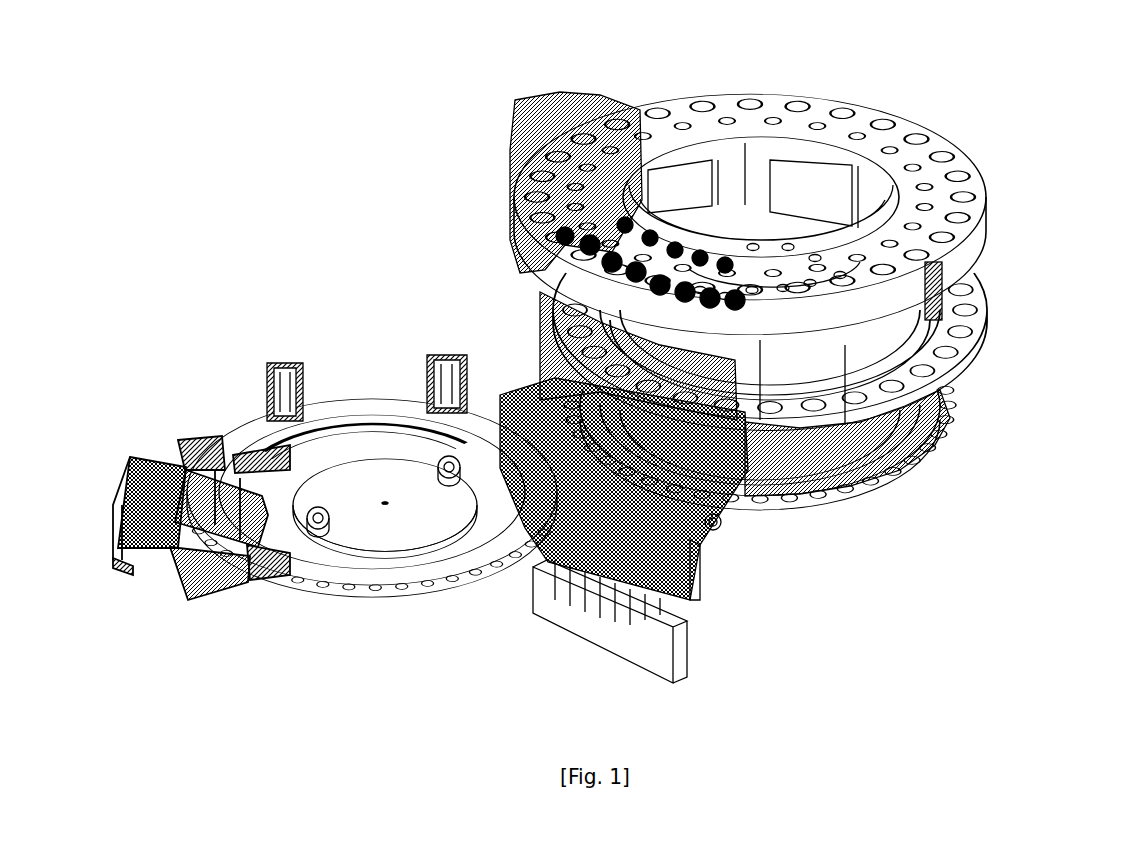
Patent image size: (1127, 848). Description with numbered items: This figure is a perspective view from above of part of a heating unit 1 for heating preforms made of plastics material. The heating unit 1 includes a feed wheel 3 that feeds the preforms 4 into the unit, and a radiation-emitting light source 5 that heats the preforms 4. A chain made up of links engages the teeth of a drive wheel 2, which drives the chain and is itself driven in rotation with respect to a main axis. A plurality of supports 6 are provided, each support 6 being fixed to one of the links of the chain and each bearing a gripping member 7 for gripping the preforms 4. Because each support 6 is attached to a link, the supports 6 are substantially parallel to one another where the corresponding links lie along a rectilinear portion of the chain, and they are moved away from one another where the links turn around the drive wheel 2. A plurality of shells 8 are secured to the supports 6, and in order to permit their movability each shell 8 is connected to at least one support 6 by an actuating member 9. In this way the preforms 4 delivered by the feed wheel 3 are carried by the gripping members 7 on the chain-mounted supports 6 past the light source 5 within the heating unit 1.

The heating unit 1 is at (1024, 150).
The drive wheel 2 is at (793, 100).
The feed wheel 3 is at (347, 568).
The preforms 4 is at (673, 612).
The radiation-emitting light source 5 is at (578, 626).
The support 6 is at (780, 507).
The gripping member 7 is at (707, 530).
The shell 8 is at (668, 590).
The actuating member 9 is at (698, 560).